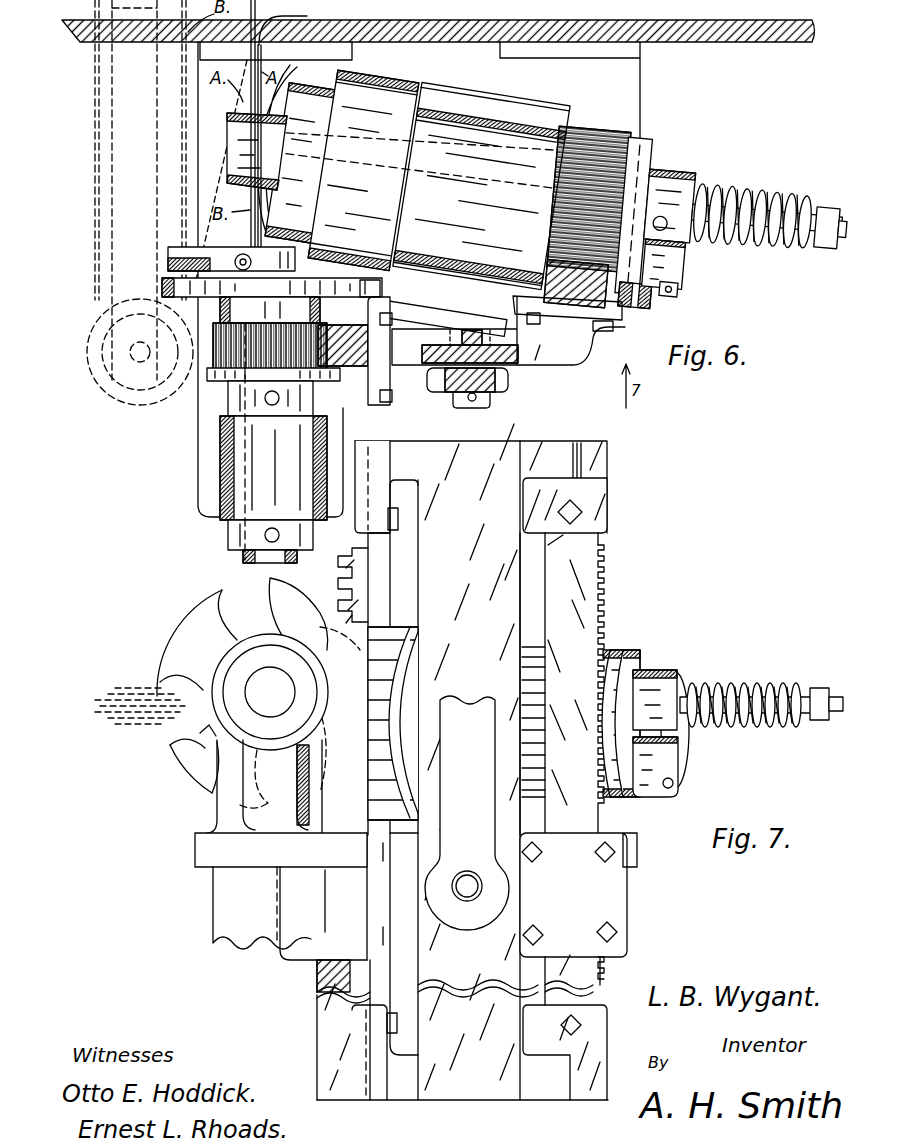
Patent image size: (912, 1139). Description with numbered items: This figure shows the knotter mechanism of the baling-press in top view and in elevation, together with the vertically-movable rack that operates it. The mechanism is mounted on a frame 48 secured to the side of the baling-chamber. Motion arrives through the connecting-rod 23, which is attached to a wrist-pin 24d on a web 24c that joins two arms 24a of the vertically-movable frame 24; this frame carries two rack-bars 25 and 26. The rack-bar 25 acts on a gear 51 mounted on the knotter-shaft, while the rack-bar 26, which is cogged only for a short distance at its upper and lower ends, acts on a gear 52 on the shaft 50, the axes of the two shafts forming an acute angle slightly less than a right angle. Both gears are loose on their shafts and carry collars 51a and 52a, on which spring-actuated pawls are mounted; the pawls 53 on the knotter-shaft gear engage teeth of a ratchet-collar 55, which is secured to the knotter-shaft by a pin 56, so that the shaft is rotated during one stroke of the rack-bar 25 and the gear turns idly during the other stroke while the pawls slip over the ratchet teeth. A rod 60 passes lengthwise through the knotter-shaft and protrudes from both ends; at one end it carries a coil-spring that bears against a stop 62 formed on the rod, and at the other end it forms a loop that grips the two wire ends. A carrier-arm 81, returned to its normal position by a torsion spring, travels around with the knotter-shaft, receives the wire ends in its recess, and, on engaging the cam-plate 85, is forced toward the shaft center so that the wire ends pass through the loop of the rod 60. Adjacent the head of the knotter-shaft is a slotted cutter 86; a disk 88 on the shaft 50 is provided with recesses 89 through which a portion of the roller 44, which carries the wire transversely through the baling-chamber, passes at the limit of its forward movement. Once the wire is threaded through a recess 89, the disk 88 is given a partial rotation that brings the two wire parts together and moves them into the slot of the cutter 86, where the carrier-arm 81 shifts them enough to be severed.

In FIG. 7, the connecting-rod 23 is at (437, 432).
In FIG. 6, the vertically-movable frame 24 is at (508, 340).
In FIG. 6, the arms 24a is at (538, 358).
In FIG. 7, the arms 24a is at (540, 443).
In FIG. 6, the web 24c is at (440, 382).
In FIG. 7, the web 24c is at (471, 757).
In FIG. 6, the wrist-pin 24d is at (476, 400).
In FIG. 7, the wrist-pin 24d is at (470, 905).
In FIG. 6, the rack-bar 25 is at (441, 317).
In FIG. 7, the rack-bar 25 is at (578, 598).
In FIG. 6, the rack-bar 26 is at (372, 398).
In FIG. 7, the rack-bar 26 is at (363, 590).
In FIG. 6, the roller 44 is at (128, 400).
In FIG. 7, the roller 44 is at (95, 702).
In FIG. 7, the frame 48 is at (222, 905).
In FIG. 6, the shaft 50 is at (255, 568).
In FIG. 7, the shaft 50 is at (267, 733).
In FIG. 6, the gear 51 is at (589, 199).
In FIG. 7, the gear 51 is at (608, 650).
In FIG. 6, the collar 51a is at (634, 215).
In FIG. 7, the collar 51a is at (635, 657).
In FIG. 6, the gear 52 is at (257, 355).
In FIG. 6, the collar 52a is at (313, 378).
In FIG. 6, the spring-actuated pawls 53 is at (635, 295).
In FIG. 6, the ratchet-collar 55 is at (667, 233).
In FIG. 7, the ratchet-collar 55 is at (677, 677).
In FIG. 6, the pin 56 is at (660, 223).
In FIG. 7, the pin 56 is at (668, 783).
In FIG. 6, the rod 60 is at (767, 218).
In FIG. 7, the rod 60 is at (742, 688).
In FIG. 6, the stop 62 is at (831, 228).
In FIG. 7, the stop 62 is at (826, 690).
In FIG. 6, the carrier-arm 81 is at (242, 255).
In FIG. 6, the cam-plate 85 is at (291, 70).
In FIG. 6, the cutter 86 is at (195, 262).
In FIG. 6, the disk 88 is at (163, 286).
In FIG. 7, the disk 88 is at (163, 662).
In FIG. 6, the recesses 89 is at (262, 291).